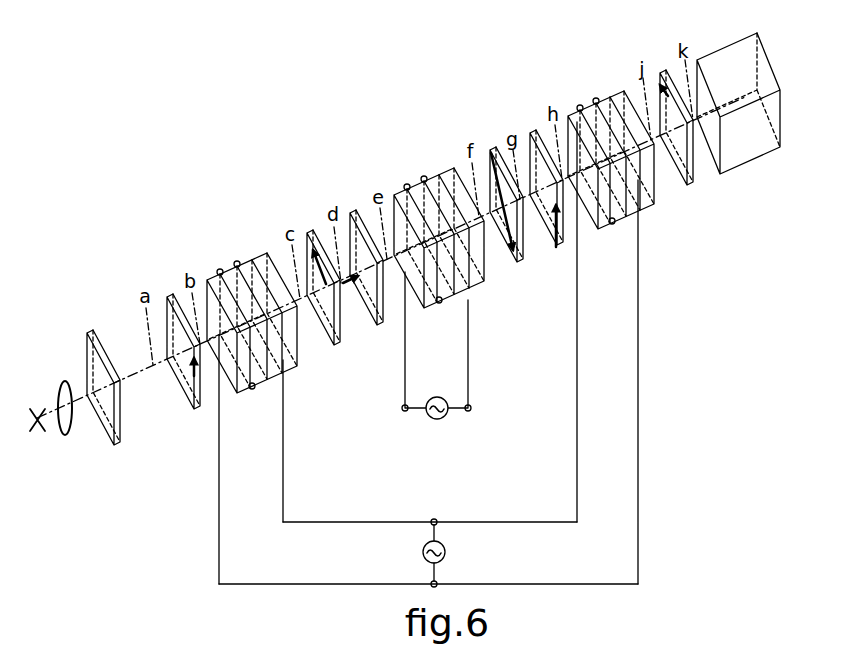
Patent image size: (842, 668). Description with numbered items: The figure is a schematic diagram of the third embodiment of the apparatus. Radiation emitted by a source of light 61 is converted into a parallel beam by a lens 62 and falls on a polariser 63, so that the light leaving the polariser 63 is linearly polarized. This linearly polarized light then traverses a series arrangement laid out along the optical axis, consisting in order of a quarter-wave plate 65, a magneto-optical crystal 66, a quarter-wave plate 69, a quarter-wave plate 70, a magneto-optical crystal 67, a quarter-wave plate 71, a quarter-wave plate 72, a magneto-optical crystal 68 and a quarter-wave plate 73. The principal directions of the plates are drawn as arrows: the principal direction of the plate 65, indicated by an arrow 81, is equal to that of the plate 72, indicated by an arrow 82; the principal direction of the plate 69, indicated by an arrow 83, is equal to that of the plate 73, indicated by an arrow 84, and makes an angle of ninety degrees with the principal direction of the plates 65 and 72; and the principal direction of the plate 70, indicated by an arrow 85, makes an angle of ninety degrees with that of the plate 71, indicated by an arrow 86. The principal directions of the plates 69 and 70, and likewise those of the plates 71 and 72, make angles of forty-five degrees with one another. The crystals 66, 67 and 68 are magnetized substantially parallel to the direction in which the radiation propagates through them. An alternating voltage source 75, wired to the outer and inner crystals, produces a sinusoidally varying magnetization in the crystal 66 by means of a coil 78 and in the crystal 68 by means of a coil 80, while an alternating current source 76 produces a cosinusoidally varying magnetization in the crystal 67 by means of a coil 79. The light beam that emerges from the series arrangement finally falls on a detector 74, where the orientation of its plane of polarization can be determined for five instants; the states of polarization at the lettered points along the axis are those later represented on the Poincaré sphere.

The source of light 61 is at (38, 432).
The lens 62 is at (67, 432).
The polariser 63 is at (112, 443).
The λ/4 plate 65 is at (194, 410).
The magneto-optical crystal 66 is at (292, 368).
The magneto-optical crystal 67 is at (477, 286).
The magneto-optical crystal 68 is at (642, 212).
The λ/4 plate 69 is at (333, 347).
The λ/4 plate 70 is at (376, 325).
The λ/4 plate 71 is at (519, 268).
The λ/4 plate 72 is at (558, 246).
The λ/4 plate 73 is at (688, 195).
The detector 74 is at (748, 163).
The alternating voltage source 75 is at (445, 549).
The alternating current source 76 is at (446, 419).
The coil 78 is at (251, 270).
The coil 79 is at (437, 188).
The coil 80 is at (618, 102).
The arrow 81 is at (179, 383).
The arrow 82 is at (553, 246).
The arrow 83 is at (311, 240).
The arrow 84 is at (657, 86).
The arrow 85 is at (348, 272).
The arrow 86 is at (491, 155).